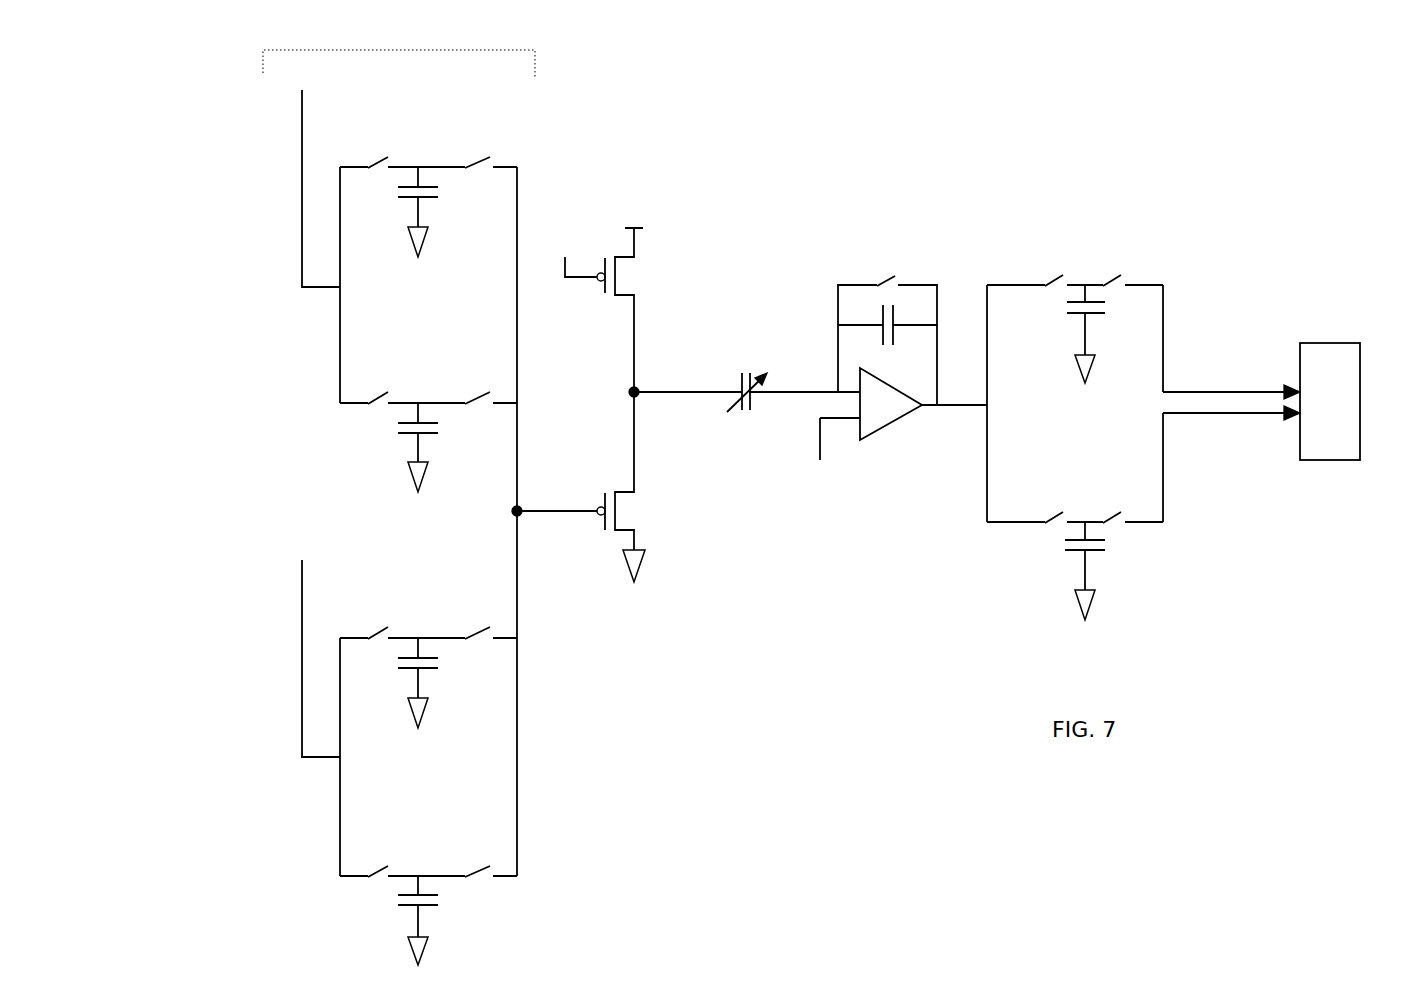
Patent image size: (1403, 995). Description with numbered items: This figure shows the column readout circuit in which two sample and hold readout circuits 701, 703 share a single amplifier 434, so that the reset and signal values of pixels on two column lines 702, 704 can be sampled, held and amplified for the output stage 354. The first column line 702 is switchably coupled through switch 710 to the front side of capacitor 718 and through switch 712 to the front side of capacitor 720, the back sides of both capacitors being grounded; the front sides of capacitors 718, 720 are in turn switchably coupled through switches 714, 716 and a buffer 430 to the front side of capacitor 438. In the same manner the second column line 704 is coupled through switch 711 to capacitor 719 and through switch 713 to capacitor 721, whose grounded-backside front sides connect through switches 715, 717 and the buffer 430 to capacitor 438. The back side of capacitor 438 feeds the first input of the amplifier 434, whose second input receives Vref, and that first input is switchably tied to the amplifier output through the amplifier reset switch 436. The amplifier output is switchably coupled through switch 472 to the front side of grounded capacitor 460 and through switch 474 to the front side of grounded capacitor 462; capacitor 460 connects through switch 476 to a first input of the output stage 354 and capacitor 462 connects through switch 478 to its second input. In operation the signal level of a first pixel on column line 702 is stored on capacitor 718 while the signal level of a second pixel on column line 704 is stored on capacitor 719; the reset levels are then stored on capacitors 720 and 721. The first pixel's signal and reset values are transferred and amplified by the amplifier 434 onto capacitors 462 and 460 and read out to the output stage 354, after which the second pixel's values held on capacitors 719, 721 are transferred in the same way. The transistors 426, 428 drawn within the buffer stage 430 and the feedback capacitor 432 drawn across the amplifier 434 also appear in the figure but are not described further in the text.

The output stage 354 is at (1261, 401).
The load transistor 426 is at (635, 275).
The transistor 428 is at (635, 512).
The buffer 430 is at (621, 378).
The feedback capacitor Cf 432 is at (917, 312).
The amplifier 434 is at (868, 383).
The Amp Rst switch 436 is at (910, 273).
The capacitor 438 is at (757, 400).
The capacitor 460 is at (1097, 313).
The capacitor 462 is at (1100, 560).
The SHR1 switch 472 is at (1060, 275).
The SHS1 switch 474 is at (1060, 512).
The SHR2 switch 476 is at (1120, 275).
The SHR2 switch 478 is at (1118, 523).
The sample and hold read out circuit 701 is at (253, 83).
The column line 702 is at (307, 130).
The sample and hold read out circuit 703 is at (253, 555).
The column line 704 is at (307, 600).
The SH1 switch 710 is at (385, 158).
The SH5 switch 711 is at (385, 627).
The SH2 switch 712 is at (385, 392).
The SH6 switch 713 is at (385, 866).
The SH3 switch 714 is at (513, 145).
The SH7 switch 715 is at (512, 613).
The SH4 switch 716 is at (512, 377).
The SH8 switch 717 is at (512, 849).
The C1 capacitor 718 is at (430, 198).
The C3 capacitor 719 is at (430, 669).
The C2 capacitor 720 is at (430, 434).
The C4 capacitor 721 is at (430, 906).